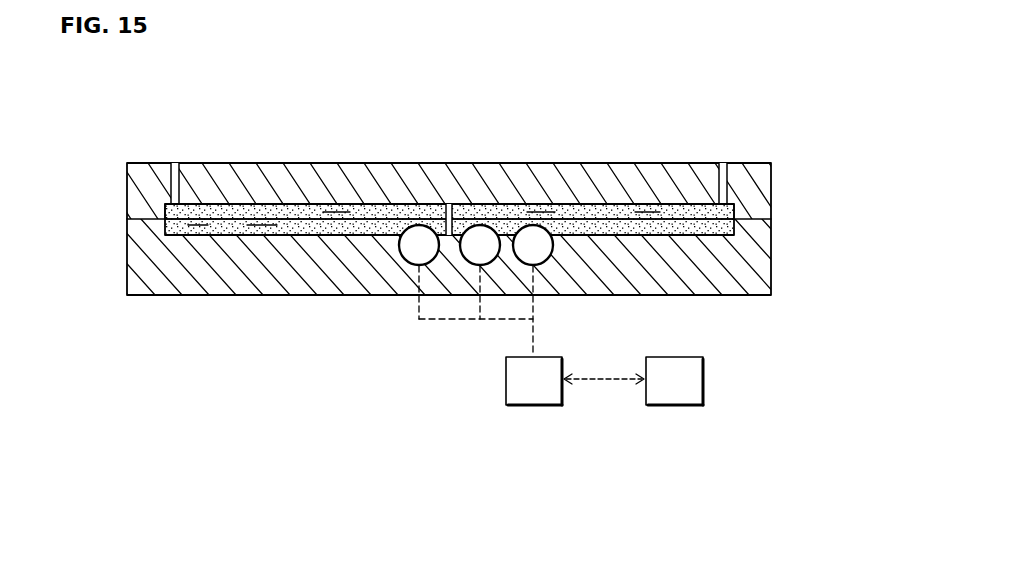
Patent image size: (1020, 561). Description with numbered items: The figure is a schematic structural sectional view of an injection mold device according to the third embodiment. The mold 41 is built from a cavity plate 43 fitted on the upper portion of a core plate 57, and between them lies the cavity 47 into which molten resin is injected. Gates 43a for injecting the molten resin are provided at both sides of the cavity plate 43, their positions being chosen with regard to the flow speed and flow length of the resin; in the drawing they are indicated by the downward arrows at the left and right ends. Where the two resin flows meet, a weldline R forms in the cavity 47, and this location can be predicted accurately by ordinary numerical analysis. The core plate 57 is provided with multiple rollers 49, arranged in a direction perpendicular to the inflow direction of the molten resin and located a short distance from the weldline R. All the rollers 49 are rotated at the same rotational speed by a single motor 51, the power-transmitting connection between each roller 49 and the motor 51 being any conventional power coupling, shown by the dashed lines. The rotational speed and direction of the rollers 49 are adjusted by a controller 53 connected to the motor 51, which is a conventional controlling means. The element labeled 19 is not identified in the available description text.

The mold 41 is at (768, 122).
The cavity plate 43 is at (278, 164).
The gates 43a is at (177, 159).
The cavity 47 is at (418, 211).
The weldline R is at (453, 205).
The substrate 19 is at (239, 236).
The core plate 57 is at (215, 268).
The rollers 49 is at (431, 266).
The motor 51 is at (537, 407).
The controller 53 is at (673, 407).